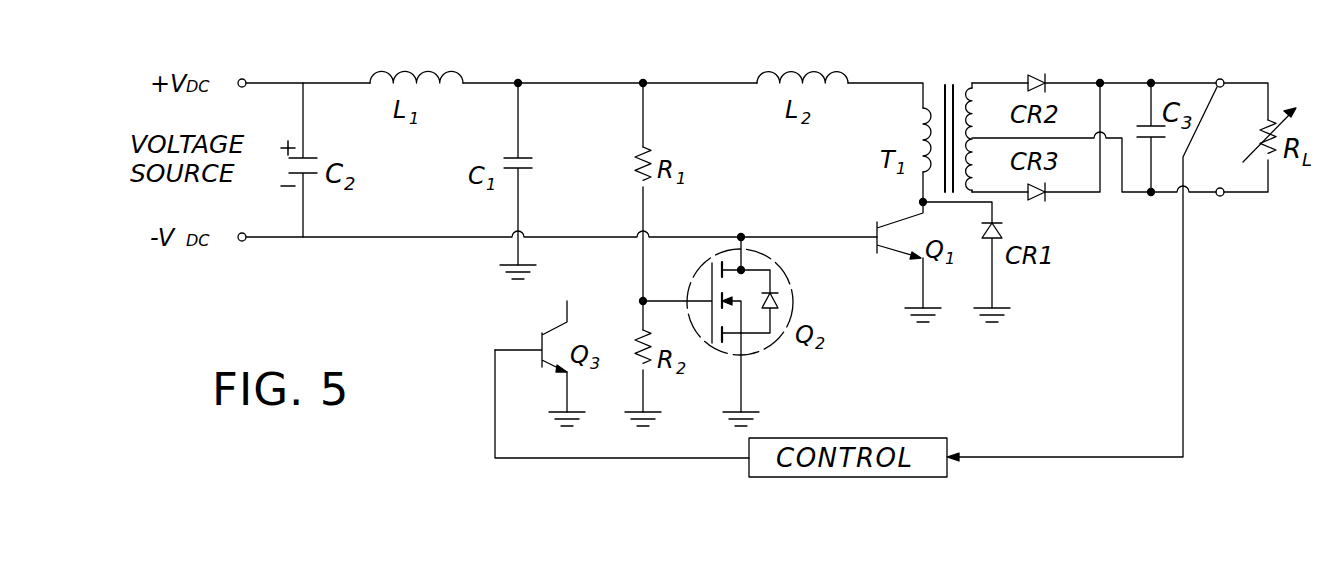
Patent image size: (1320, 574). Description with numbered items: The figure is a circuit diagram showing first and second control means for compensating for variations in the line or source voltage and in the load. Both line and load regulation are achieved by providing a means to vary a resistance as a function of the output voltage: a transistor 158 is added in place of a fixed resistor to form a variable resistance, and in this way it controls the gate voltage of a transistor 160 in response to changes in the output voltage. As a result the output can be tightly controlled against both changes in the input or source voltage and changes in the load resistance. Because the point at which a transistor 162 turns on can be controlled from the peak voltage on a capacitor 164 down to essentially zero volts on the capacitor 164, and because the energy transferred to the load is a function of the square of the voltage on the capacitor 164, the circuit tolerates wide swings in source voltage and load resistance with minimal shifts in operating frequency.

The transistor 158 is at (542, 338).
The transistor 160 is at (712, 272).
The transistor 162 is at (877, 237).
The capacitor 164 is at (517, 156).